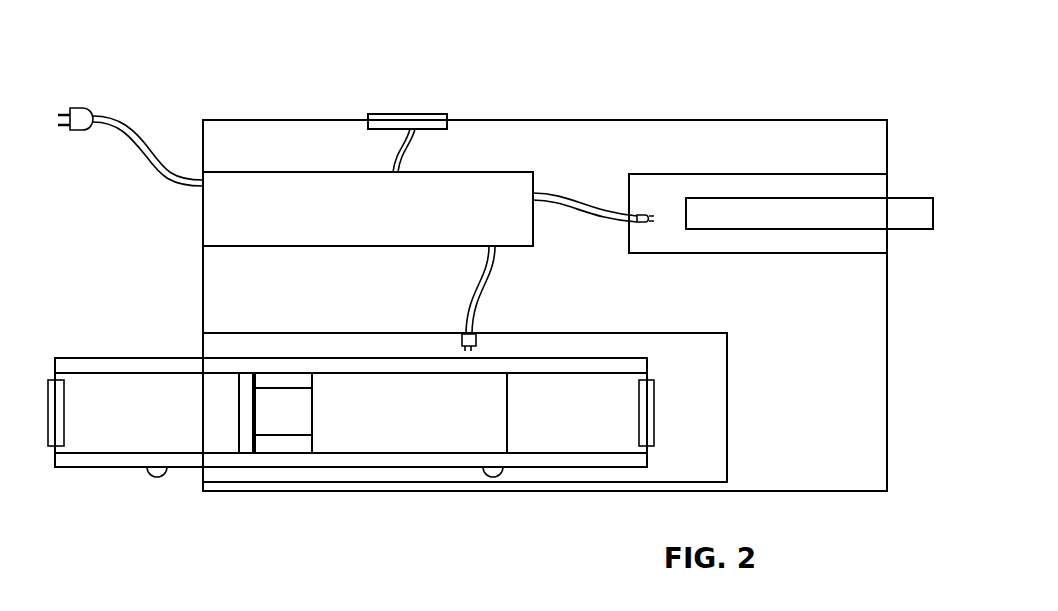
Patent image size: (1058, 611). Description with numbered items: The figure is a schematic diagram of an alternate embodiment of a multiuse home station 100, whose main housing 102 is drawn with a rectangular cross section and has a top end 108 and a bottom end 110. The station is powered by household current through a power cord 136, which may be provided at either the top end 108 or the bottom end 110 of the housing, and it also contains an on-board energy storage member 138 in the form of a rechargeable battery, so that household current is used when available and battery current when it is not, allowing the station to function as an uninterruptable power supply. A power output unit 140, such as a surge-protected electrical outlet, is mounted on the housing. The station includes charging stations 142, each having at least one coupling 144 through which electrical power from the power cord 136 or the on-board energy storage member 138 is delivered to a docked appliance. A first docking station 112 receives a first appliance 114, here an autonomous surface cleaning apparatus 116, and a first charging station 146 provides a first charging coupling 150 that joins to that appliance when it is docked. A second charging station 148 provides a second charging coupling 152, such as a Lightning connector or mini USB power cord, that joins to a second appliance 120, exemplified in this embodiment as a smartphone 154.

The multiuse home station 100 is at (250, 78).
The main housing 102 is at (824, 120).
The top end 108 is at (604, 80).
The bottom end 110 is at (440, 546).
The first docking station 112 is at (200, 350).
The first appliance 114 is at (127, 488).
The autonomous surface cleaning apparatus 116 is at (248, 467).
The second appliance 120 is at (863, 190).
The power cord 136 is at (141, 137).
The on-board energy storage member 138 is at (356, 170).
The power output unit 140 is at (436, 114).
The charging station 142 is at (455, 325).
The coupling 144 is at (628, 204).
The first charging station 146 is at (437, 340).
The second charging station 148 is at (635, 265).
The first charging coupling 150 is at (463, 350).
The second charging coupling 152 is at (647, 212).
The smartphone 154 is at (745, 195).